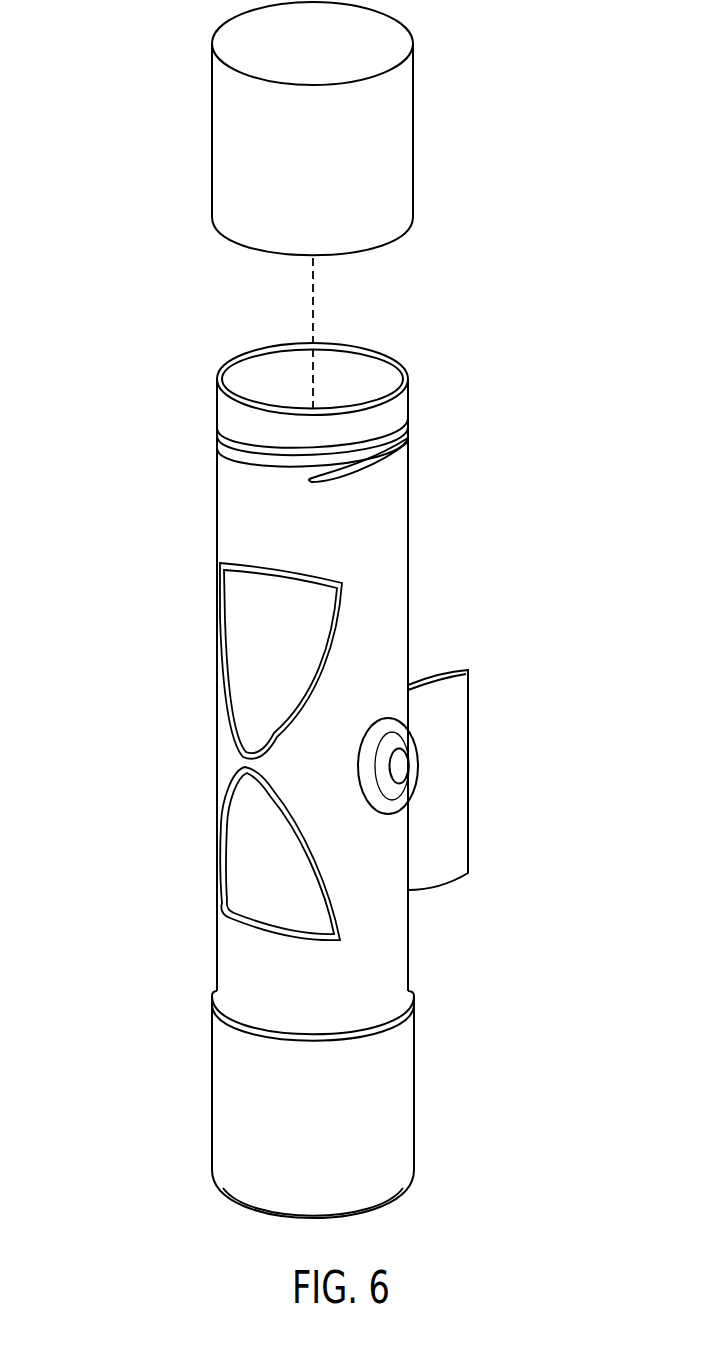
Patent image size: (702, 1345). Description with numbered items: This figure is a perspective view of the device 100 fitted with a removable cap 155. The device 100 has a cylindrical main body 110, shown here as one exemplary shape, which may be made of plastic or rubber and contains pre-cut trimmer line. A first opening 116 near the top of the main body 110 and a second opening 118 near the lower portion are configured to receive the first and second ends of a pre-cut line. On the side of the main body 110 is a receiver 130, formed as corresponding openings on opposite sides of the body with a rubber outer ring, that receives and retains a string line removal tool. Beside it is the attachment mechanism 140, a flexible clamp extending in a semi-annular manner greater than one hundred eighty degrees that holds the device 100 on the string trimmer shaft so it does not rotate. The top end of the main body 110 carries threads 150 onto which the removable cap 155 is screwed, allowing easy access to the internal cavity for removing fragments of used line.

The device 100 is at (124, 372).
The main body 110 is at (397, 530).
The first opening 116 is at (232, 657).
The second opening 118 is at (232, 860).
The receiver 130 is at (402, 767).
The attachment mechanism 140 is at (455, 842).
The threads 150 is at (412, 402).
The removable cap 155 is at (398, 143).